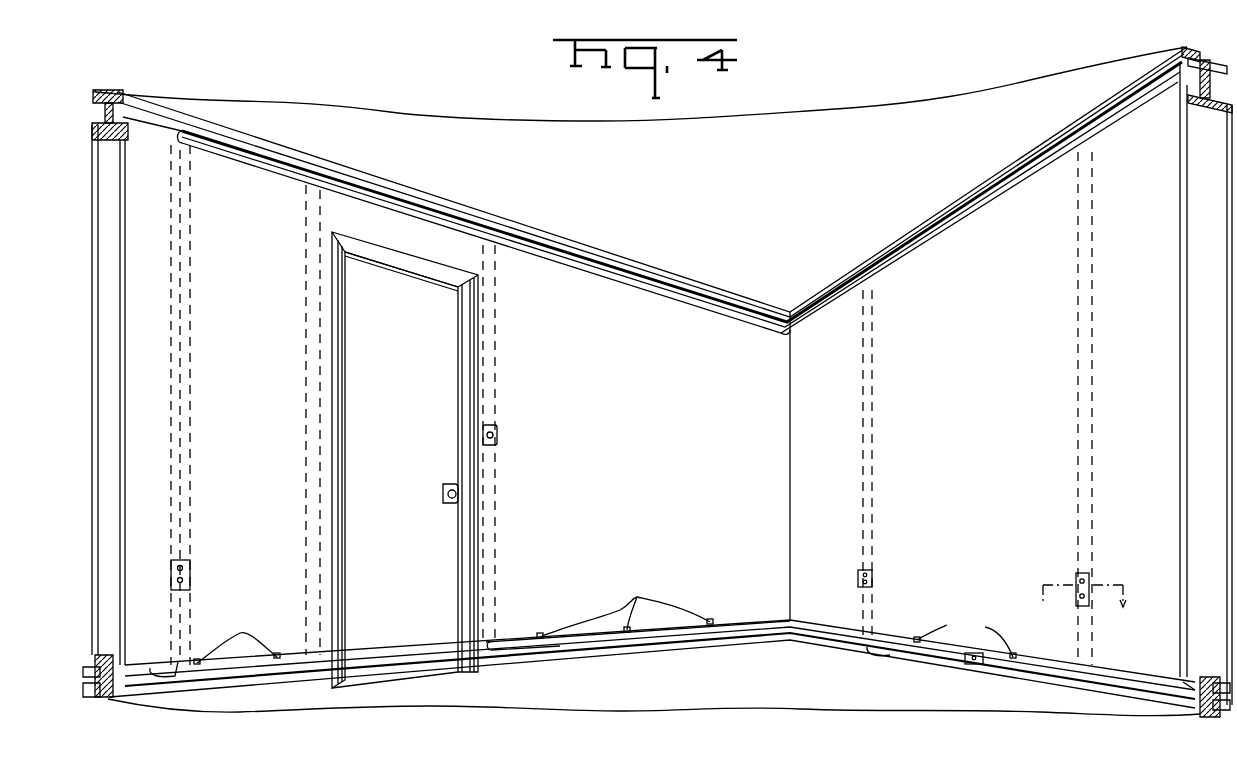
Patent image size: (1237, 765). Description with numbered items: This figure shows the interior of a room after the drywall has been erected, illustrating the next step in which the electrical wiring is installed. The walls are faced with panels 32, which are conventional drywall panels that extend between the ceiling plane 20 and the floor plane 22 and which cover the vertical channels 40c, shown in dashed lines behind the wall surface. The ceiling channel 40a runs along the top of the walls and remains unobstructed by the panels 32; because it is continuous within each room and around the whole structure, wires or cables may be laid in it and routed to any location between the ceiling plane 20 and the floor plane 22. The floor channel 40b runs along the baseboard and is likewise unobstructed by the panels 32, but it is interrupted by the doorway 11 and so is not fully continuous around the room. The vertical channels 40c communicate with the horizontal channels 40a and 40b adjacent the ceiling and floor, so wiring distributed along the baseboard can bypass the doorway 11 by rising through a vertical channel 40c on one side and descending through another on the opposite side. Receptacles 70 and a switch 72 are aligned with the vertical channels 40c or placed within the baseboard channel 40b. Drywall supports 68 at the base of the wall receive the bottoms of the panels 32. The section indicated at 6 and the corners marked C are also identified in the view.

The doorway 11 is at (404, 603).
The ceiling plane 20 is at (760, 204).
The floor plane 22 is at (745, 679).
The panels 32 is at (660, 394).
The ceiling channel 40a is at (1087, 138).
The floor channel 40b is at (1045, 686).
The vertical channels 40c is at (193, 296).
The drywall supports 68 is at (605, 616).
The receptacles 70 is at (193, 572).
The switches 72 is at (498, 435).
The section line 6- 6 is at (1081, 609).
The corner connector C is at (776, 336).